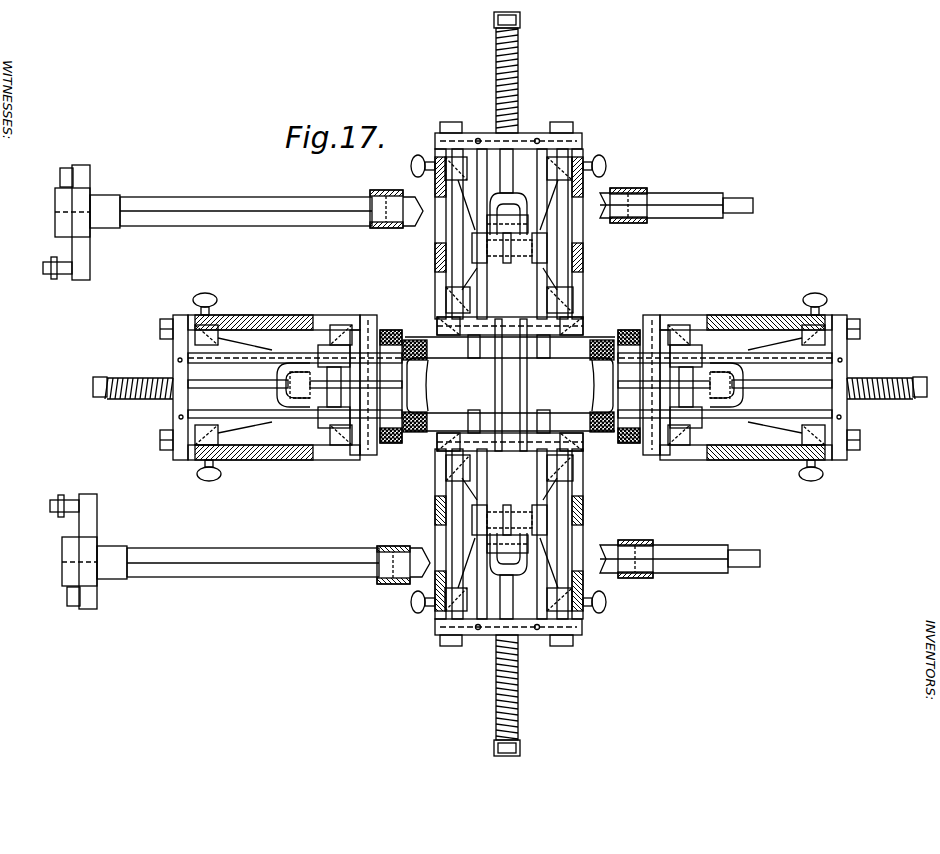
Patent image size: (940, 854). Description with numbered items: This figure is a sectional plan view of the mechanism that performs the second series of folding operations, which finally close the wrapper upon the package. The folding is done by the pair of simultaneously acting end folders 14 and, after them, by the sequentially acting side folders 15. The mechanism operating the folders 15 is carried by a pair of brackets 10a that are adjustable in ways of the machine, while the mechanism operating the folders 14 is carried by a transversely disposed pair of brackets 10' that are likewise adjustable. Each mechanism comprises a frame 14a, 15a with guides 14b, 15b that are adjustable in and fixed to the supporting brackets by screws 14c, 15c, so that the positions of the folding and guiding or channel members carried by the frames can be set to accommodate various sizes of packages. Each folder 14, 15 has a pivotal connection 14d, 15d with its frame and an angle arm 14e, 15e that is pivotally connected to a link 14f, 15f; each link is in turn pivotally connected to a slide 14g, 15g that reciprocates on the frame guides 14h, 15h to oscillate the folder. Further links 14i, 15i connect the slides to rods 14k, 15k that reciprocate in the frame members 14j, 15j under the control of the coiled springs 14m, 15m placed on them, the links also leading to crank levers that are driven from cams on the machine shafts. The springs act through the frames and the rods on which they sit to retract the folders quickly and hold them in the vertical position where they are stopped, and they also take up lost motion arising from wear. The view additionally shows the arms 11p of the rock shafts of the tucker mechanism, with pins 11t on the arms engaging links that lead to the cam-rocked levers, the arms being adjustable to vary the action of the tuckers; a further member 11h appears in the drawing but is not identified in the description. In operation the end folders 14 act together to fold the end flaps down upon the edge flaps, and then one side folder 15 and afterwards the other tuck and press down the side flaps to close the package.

The brackets 10a is at (595, 180).
The brackets 10' is at (499, 413).
The rod 11h is at (194, 205).
The arms 11p is at (80, 252).
The pins 11t is at (64, 280).
The folders 14 is at (425, 375).
The frame 14a is at (182, 322).
The guides 14b is at (252, 325).
The screws 14c is at (210, 293).
The pivotal connections 14d is at (392, 340).
The angle arms 14e is at (400, 367).
The links 14f is at (366, 328).
The slides 14g is at (340, 330).
The frame guides 14h is at (213, 415).
The links 14i is at (305, 328).
The frame members 14j is at (176, 352).
The rods 14k is at (220, 388).
The coiled springs 14m is at (115, 400).
The folders 15 is at (495, 355).
The frame 15a is at (592, 315).
The guides 15b is at (452, 212).
The screws 15c is at (419, 158).
The pivotal connections 15d is at (556, 358).
The angle arms 15e is at (503, 435).
The links 15f is at (517, 475).
The slides 15g is at (545, 255).
The frame guides 15h is at (560, 150).
The links 15i is at (508, 228).
The frame members 15j is at (513, 143).
The rods 15k is at (505, 167).
The coiled springs 15m is at (517, 53).